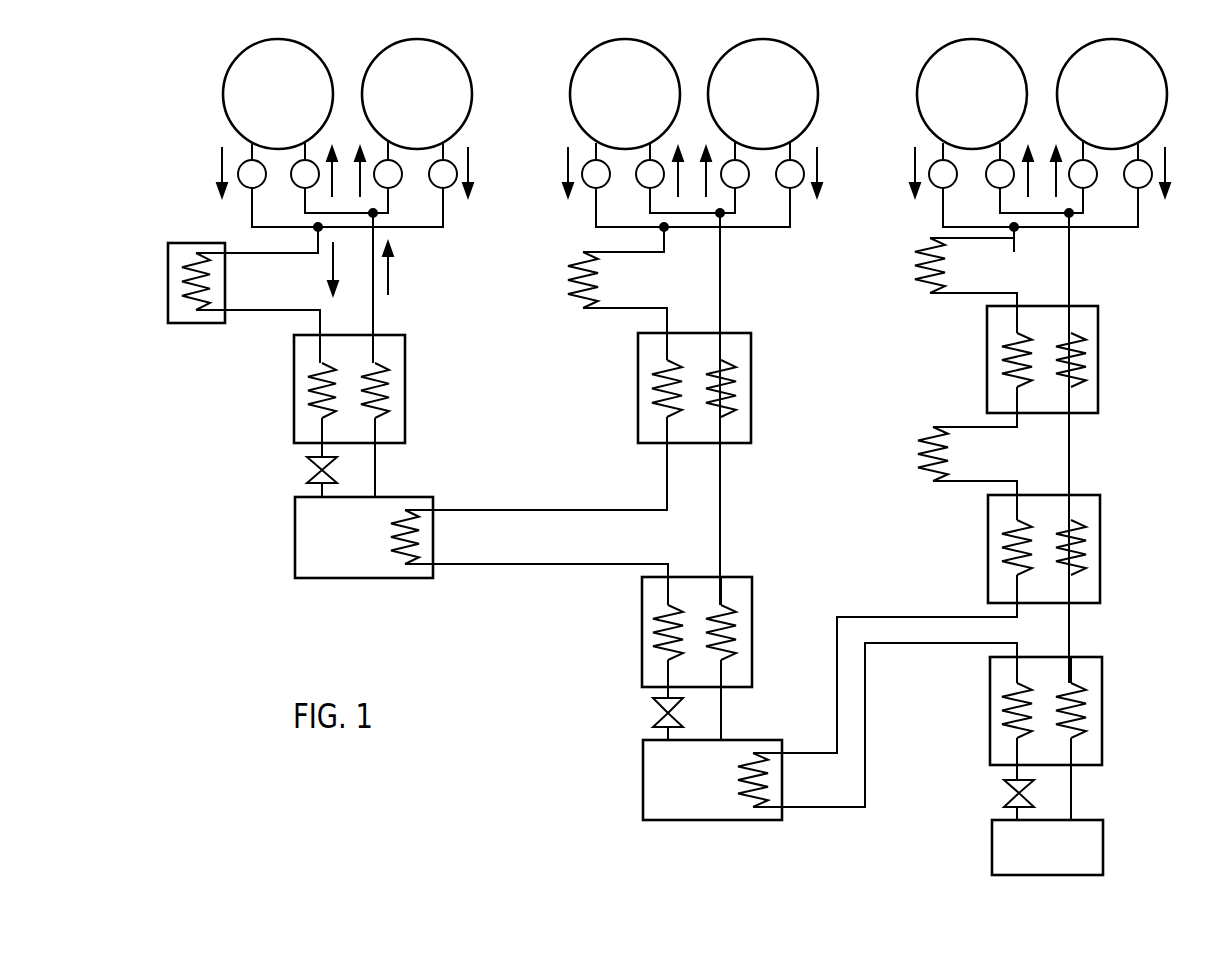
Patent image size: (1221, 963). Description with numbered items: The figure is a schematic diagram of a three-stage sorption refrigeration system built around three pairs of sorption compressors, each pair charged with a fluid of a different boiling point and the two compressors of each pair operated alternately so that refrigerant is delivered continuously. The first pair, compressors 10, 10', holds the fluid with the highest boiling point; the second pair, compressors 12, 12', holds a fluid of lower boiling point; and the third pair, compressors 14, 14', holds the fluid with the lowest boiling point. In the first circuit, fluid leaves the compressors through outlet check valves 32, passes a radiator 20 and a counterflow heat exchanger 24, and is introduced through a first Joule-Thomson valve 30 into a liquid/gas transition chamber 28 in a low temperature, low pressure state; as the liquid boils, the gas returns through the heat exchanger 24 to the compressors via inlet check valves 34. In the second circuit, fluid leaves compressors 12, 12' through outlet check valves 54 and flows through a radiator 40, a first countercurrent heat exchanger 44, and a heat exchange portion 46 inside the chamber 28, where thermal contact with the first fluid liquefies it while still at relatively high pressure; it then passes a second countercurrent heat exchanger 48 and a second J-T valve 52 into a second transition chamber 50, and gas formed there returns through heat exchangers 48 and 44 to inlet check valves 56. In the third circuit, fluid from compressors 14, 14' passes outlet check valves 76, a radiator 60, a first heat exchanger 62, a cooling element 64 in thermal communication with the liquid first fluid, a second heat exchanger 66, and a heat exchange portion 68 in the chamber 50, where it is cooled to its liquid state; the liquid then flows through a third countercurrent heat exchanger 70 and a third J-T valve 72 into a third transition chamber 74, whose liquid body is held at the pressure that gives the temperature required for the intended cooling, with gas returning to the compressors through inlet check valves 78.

The sorption compressor 10' is at (250, 94).
The sorption compressor 10 is at (403, 91).
The sorption compressor 12' is at (603, 92).
The sorption compressor 12 is at (750, 92).
The sorption compressor 14' is at (952, 90).
The sorption compressor 14 is at (1134, 94).
The radiator 20 is at (186, 324).
The counterflow heat exchanger 24 is at (294, 399).
The liquid/gas transition chamber 28 is at (295, 538).
The first Joule-Thomson valve 30 is at (308, 470).
The outlet check valves 32 is at (246, 184).
The inlet check valves 34 is at (306, 175).
The radiator 40 is at (576, 282).
The first countercurrent heat exchanger 44 is at (640, 393).
The heat exchange portion 46 is at (418, 533).
The second countercurrent heat exchanger 48 is at (642, 617).
The second liquid/gas transition chamber 50 is at (646, 774).
The second J-T valve 52 is at (654, 710).
The outlet check valves 54 is at (591, 185).
The inlet check valves 56 is at (652, 176).
The radiator 60 is at (916, 272).
The first heat exchanger 62 is at (1096, 365).
The cooling element 64 is at (918, 458).
The second heat exchanger 66 is at (988, 545).
The heat exchange portion 68 is at (777, 788).
The third countercurrent heat exchanger 70 is at (991, 717).
The third J-T valve 72 is at (1005, 792).
The third liquid/gas transition chamber 74 is at (992, 846).
The outlet check valves 76 is at (938, 186).
The inlet check valves 78 is at (995, 174).